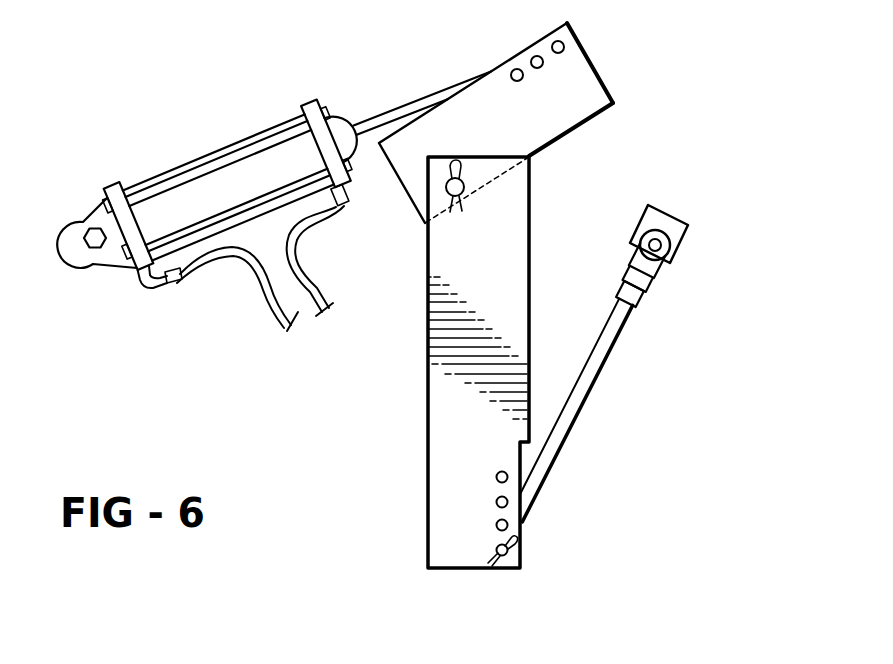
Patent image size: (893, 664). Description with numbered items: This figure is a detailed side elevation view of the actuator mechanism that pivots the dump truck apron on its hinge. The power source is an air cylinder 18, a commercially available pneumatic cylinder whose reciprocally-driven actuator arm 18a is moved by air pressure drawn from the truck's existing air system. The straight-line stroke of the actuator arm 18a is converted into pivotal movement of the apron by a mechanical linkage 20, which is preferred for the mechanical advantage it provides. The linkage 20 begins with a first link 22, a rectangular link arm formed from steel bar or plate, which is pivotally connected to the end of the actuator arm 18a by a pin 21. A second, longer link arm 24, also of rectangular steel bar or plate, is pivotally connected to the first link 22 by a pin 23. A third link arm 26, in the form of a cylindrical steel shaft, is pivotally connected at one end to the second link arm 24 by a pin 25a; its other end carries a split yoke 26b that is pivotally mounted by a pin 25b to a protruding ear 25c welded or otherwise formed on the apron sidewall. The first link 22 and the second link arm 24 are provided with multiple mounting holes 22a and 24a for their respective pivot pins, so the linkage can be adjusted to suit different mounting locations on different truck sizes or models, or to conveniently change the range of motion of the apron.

The air cylinder 18 is at (228, 145).
The actuator arm 18a is at (408, 100).
The linkage 20 is at (610, 177).
The pin 21 is at (573, 33).
The first link 22 is at (590, 85).
The mounting holes 22a is at (532, 57).
The pin 23 is at (447, 188).
The second link arm 24 is at (500, 272).
The mounting holes 24a is at (496, 477).
The pin 25a is at (517, 560).
The pin 25b is at (668, 248).
The protruding ear 25c is at (657, 217).
The third link arm 26 is at (580, 402).
The split yoke 26b is at (650, 270).